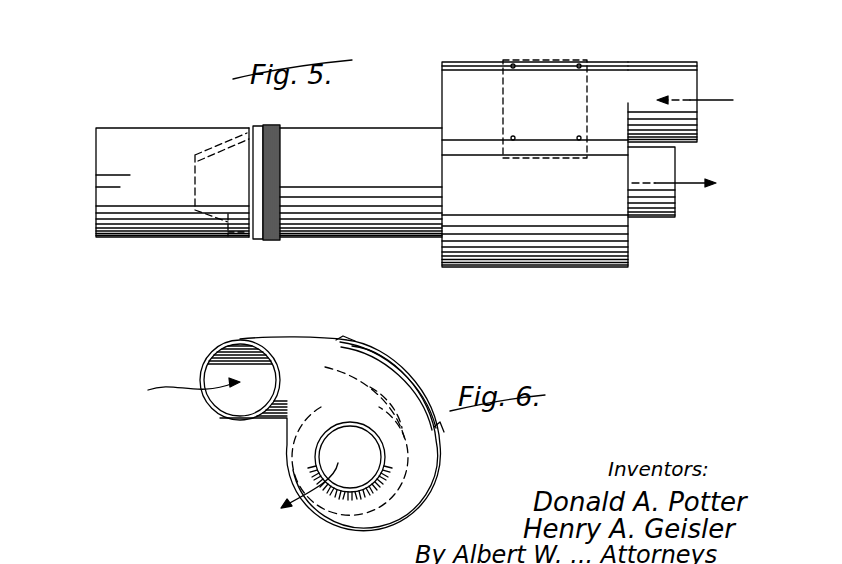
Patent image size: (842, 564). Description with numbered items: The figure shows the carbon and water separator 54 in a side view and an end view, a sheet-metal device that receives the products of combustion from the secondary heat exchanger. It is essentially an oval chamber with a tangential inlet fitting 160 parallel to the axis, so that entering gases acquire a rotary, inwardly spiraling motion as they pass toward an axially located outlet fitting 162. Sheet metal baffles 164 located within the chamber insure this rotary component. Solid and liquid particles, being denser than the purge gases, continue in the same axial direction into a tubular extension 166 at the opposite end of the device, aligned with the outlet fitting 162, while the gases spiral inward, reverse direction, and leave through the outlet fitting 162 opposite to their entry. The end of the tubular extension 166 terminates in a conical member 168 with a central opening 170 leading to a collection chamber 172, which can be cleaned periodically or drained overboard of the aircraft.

In FIG. 5, the carbon and water separator 54 is at (400, 115).
In FIG. 5, the tangential inlet fitting 160 is at (682, 113).
In FIG. 6, the tangential inlet fitting 160 is at (232, 418).
In FIG. 5, the outlet fitting 162 is at (655, 166).
In FIG. 6, the outlet fitting 162 is at (387, 472).
In FIG. 6, the sheet metal baffles 164 is at (291, 468).
In FIG. 5, the tubular extension 166 is at (308, 167).
In FIG. 5, the conical member 168 is at (228, 222).
In FIG. 5, the central opening 170 is at (196, 197).
In FIG. 5, the collection chamber 172 is at (172, 140).